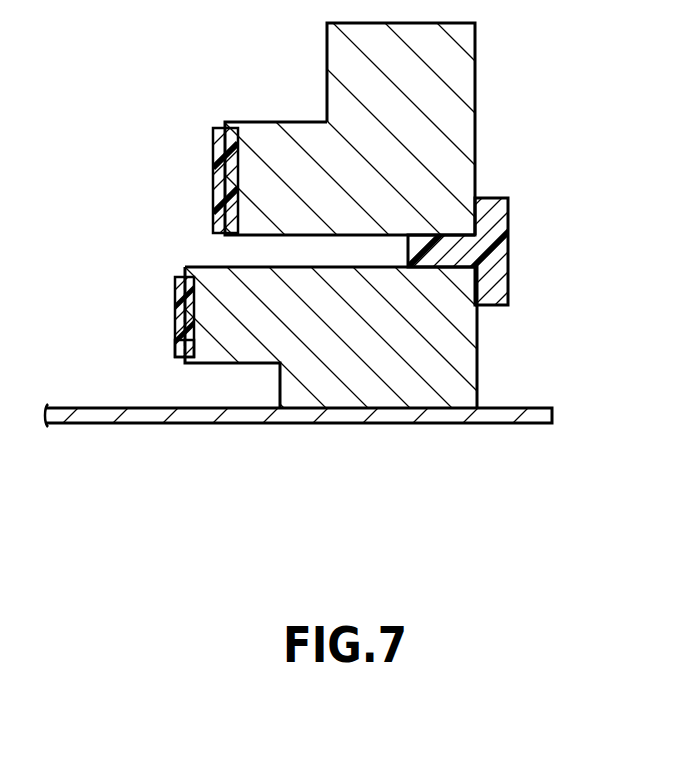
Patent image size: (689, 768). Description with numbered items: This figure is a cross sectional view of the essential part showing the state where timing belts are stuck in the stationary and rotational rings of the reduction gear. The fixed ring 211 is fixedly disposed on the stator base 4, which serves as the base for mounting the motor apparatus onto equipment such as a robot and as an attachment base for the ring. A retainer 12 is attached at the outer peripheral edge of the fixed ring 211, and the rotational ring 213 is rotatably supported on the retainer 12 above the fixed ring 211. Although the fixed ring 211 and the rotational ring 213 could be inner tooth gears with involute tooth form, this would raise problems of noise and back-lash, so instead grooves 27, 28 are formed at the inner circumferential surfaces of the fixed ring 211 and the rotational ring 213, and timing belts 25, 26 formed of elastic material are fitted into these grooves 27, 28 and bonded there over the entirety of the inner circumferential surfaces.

The rotational ring 213 is at (457, 73).
The fixed ring 211 is at (460, 352).
The retainer 12 is at (497, 255).
The timing belt 26 is at (213, 180).
The groove 28 is at (223, 157).
The timing belt 25 is at (177, 315).
The groove 27 is at (183, 343).
The stator base 4 is at (507, 425).